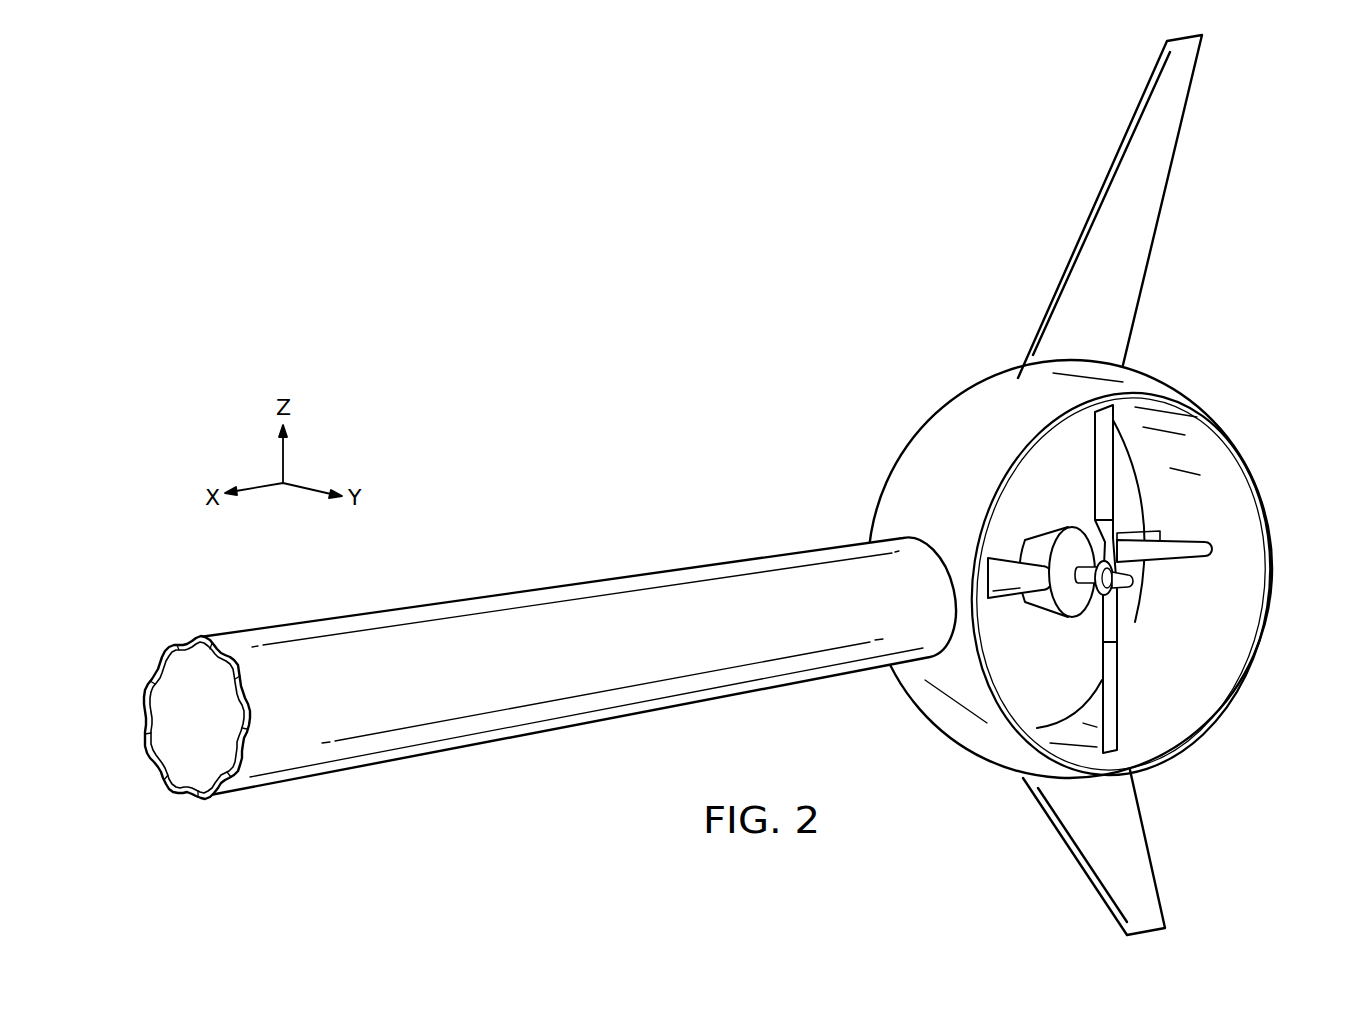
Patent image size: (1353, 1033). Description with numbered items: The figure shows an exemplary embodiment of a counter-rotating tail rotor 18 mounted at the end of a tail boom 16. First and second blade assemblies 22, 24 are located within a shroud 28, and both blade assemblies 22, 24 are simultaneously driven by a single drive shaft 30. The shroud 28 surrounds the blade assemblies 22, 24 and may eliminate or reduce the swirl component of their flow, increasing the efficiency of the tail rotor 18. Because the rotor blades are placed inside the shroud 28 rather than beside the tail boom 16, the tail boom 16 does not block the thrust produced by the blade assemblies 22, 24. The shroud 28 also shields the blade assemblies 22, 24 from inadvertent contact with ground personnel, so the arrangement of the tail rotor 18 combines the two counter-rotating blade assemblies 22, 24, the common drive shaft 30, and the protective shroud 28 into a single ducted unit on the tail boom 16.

The tail boom 16 is at (560, 586).
The counter-rotating tail rotor 18 is at (1087, 485).
The first blade assembly 22 is at (1142, 510).
The second blade assembly 24 is at (1079, 664).
The shroud 28 is at (1268, 510).
The drive shaft 30 is at (1007, 598).